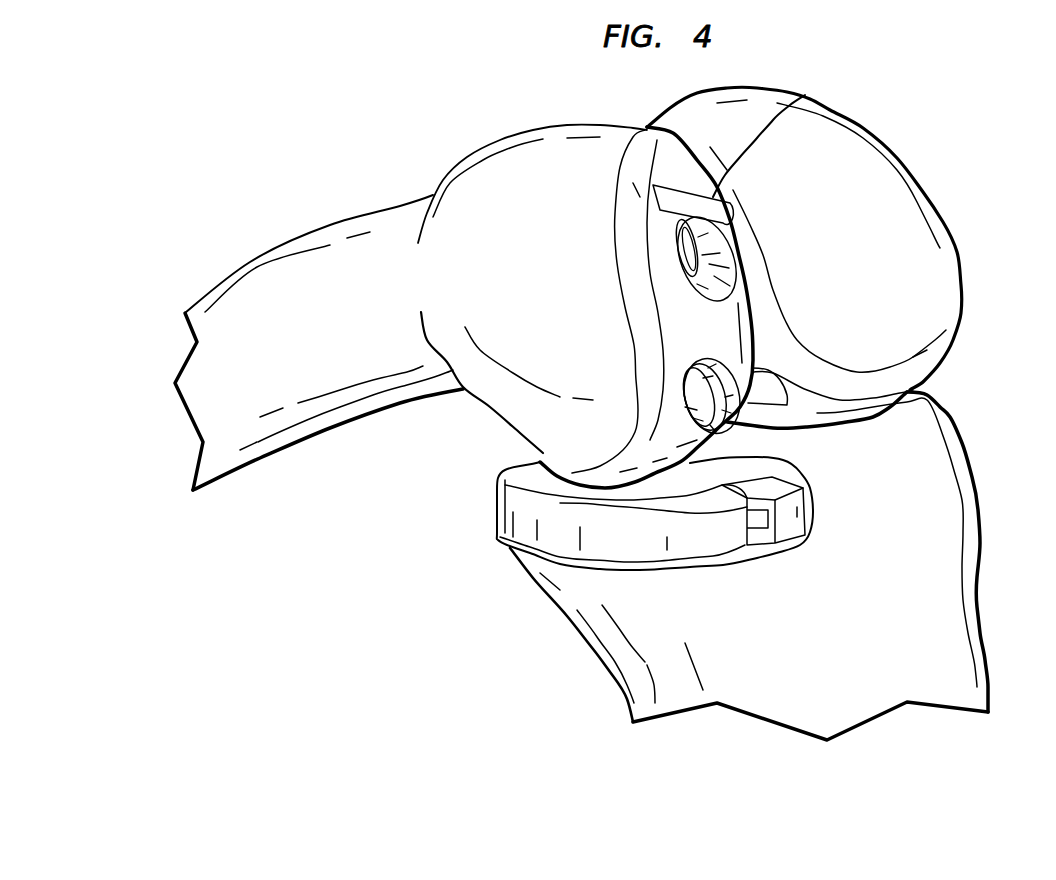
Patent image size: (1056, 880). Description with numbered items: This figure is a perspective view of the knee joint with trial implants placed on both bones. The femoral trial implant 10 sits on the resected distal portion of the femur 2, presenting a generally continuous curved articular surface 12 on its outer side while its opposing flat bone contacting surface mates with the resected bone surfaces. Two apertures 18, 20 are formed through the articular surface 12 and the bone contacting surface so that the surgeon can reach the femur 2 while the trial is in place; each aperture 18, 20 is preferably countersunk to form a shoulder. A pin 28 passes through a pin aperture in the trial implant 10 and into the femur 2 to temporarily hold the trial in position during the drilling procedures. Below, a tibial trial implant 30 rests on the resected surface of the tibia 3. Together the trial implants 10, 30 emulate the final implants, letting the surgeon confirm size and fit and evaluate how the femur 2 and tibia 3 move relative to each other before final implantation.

The femur 2 is at (488, 212).
The tibia 3 is at (662, 657).
The femoral trial implant 10 is at (600, 297).
The articular surface 12 is at (723, 333).
The aperture 18 is at (713, 263).
The aperture 20 is at (930, 418).
The pin 28 is at (805, 95).
The tibial trial implant 30 is at (520, 527).